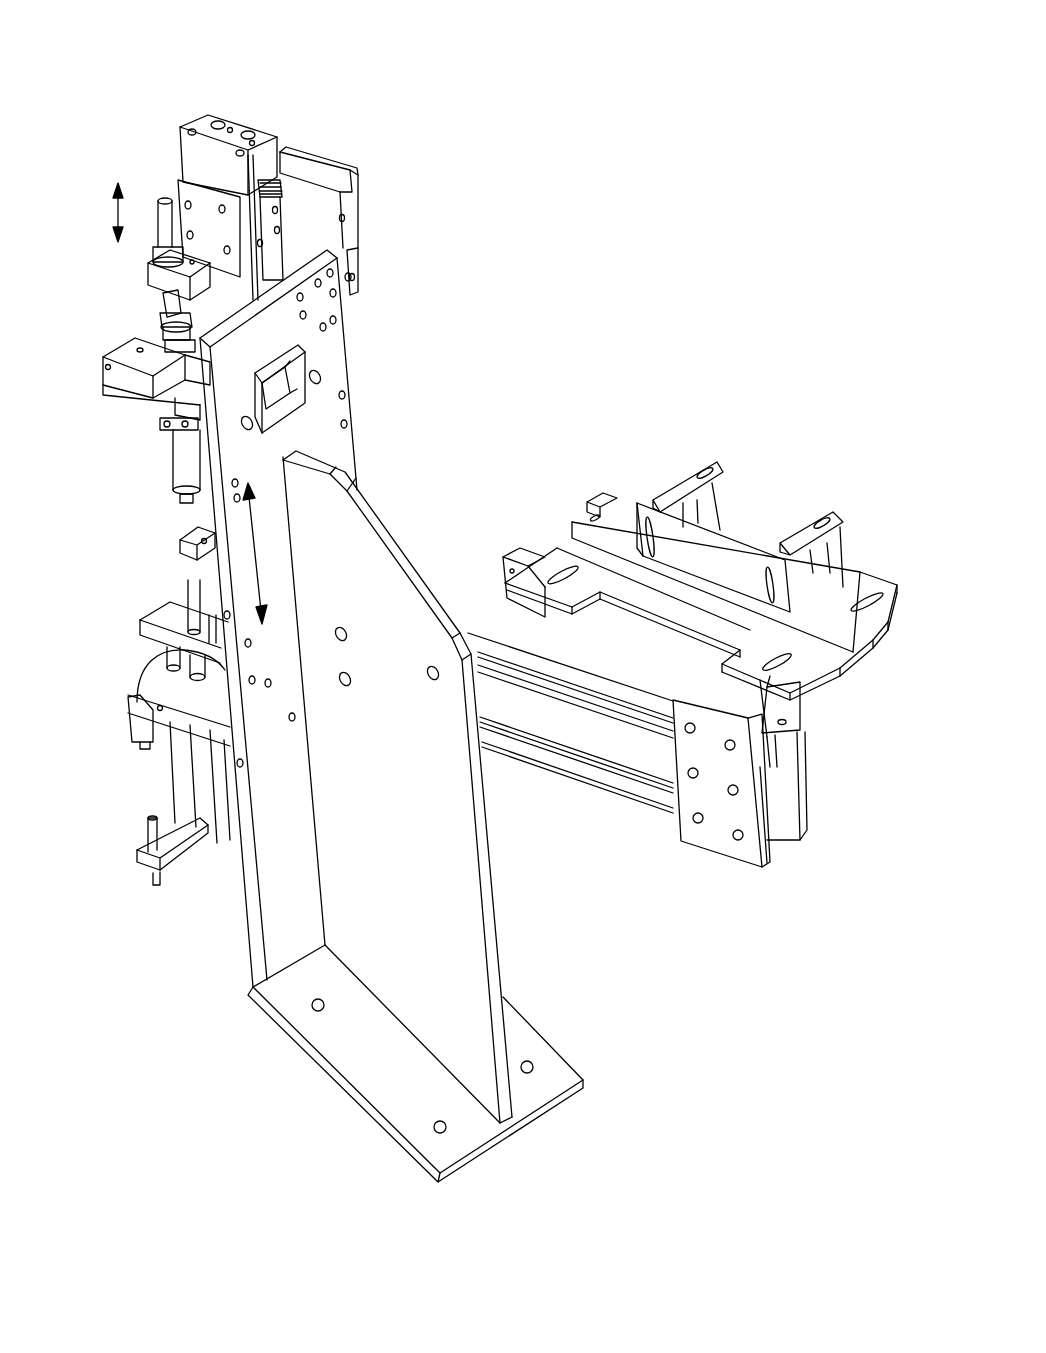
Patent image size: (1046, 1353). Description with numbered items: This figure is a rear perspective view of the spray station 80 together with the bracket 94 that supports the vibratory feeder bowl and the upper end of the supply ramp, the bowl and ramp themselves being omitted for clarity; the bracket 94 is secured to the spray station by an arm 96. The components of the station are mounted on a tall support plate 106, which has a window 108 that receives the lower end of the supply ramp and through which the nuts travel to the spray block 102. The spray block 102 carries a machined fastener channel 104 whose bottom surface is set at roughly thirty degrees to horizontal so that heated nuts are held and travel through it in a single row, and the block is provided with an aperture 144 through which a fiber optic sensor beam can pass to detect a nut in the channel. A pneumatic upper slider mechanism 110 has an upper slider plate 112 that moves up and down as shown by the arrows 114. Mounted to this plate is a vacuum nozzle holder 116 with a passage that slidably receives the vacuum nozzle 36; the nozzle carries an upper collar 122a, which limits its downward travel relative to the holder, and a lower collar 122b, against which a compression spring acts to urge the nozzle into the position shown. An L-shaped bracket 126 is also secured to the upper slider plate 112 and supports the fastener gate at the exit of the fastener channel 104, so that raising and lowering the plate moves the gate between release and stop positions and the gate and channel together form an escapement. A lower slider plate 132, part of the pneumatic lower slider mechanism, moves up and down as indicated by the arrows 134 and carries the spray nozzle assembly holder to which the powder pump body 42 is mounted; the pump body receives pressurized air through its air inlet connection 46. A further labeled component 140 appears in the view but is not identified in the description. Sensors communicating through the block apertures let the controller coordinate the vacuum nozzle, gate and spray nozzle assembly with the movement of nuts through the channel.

The spray station 80 is at (146, 104).
The pneumatic upper slider mechanism 110 is at (258, 110).
The upper slider plate 112 is at (204, 205).
The upper collar 122a is at (152, 258).
The vacuum nozzle 36 is at (153, 223).
The arrows 114 is at (117, 211).
The vacuum nozzle holder 116 is at (144, 280).
The machined fastener channel 104 is at (153, 334).
The aperture 144 is at (105, 363).
The spray block 102 is at (108, 379).
The support arm 140 is at (192, 347).
The L-shaped bracket 126 is at (158, 424).
The powder pump body 42 is at (173, 462).
The air inlet connection 46 is at (190, 499).
The lower slider plate 132 is at (197, 519).
The arrows 134 is at (257, 572).
The lower collar 122b is at (205, 329).
The support plate 106 is at (352, 391).
The window 108 is at (278, 409).
The bracket 94 is at (718, 459).
The arm 96 is at (587, 786).